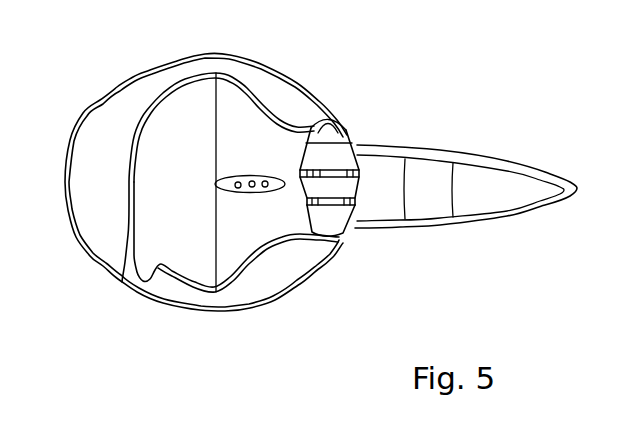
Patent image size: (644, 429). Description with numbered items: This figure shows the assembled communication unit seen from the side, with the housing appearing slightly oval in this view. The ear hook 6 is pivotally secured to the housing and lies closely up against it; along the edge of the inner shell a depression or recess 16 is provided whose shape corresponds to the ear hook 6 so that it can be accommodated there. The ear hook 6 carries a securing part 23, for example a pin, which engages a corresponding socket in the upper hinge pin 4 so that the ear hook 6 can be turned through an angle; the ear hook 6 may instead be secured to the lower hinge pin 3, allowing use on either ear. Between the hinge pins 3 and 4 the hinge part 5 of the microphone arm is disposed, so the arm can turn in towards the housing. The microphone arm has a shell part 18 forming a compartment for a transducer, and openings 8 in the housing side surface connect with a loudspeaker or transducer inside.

The ear hook 6 is at (108, 123).
The depression or recess 16 is at (258, 280).
The openings 8 is at (233, 190).
The securing part 23 is at (326, 121).
The hinge pin 4 is at (346, 140).
The hinge part 5 is at (347, 185).
The hinge pin 3 is at (332, 233).
The shell part 18 is at (490, 192).